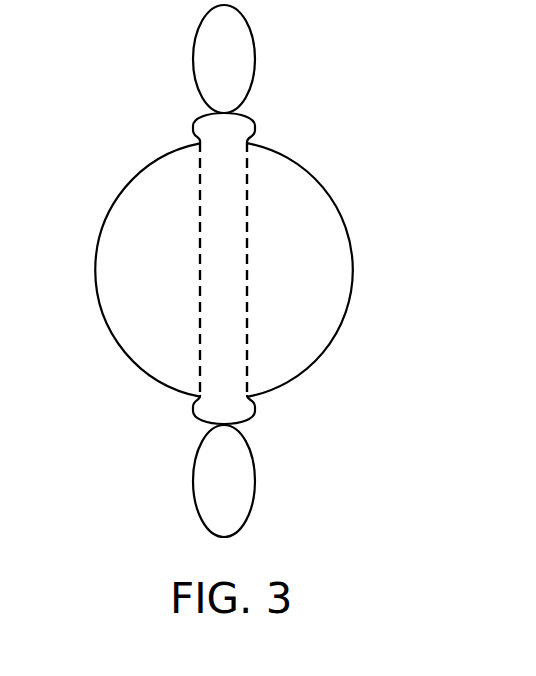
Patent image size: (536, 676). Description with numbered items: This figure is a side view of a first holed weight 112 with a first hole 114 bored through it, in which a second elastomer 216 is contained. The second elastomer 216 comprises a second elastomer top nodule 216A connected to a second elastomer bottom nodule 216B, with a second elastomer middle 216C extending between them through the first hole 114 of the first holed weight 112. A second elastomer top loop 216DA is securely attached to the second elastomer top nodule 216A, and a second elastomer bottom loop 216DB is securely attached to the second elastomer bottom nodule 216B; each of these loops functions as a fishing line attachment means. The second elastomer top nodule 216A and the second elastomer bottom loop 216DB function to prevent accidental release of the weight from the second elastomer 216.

The first holed weight 112 is at (347, 223).
The first hole 114 is at (246, 200).
The second elastomer 216 is at (254, 117).
The second elastomer top nodule 216A is at (192, 130).
The second elastomer bottom nodule 216B is at (252, 412).
The second elastomer middle 216C is at (226, 278).
The second elastomer top loop 216DA is at (250, 30).
The second elastomer bottom loop 216DB is at (253, 503).